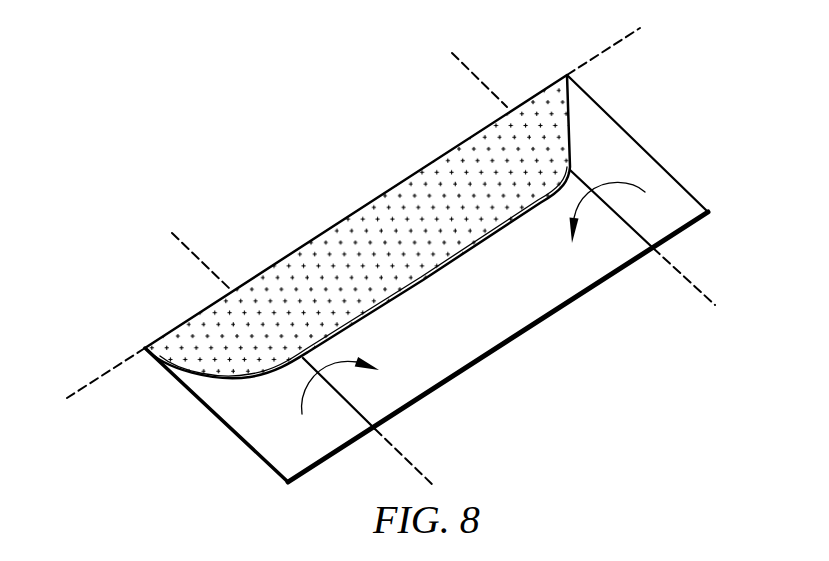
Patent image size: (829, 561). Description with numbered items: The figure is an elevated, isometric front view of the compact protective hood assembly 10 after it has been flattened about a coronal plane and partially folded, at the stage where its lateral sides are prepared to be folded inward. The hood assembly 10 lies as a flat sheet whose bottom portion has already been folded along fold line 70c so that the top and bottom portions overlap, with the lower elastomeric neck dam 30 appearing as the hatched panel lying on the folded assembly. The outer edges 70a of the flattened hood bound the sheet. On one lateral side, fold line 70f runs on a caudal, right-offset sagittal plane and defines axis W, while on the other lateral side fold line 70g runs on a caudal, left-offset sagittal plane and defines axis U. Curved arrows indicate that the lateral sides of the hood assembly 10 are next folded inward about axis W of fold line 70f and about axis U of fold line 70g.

The hood assembly 10 is at (274, 183).
The neck dam 30 is at (440, 178).
The side edges of blank 70a is at (628, 132).
The fold line 70C 70c is at (512, 347).
The fold line 70F 70f is at (355, 403).
The fold line 70G 70g is at (637, 227).
The axis U is at (467, 72).
The axis W is at (188, 252).